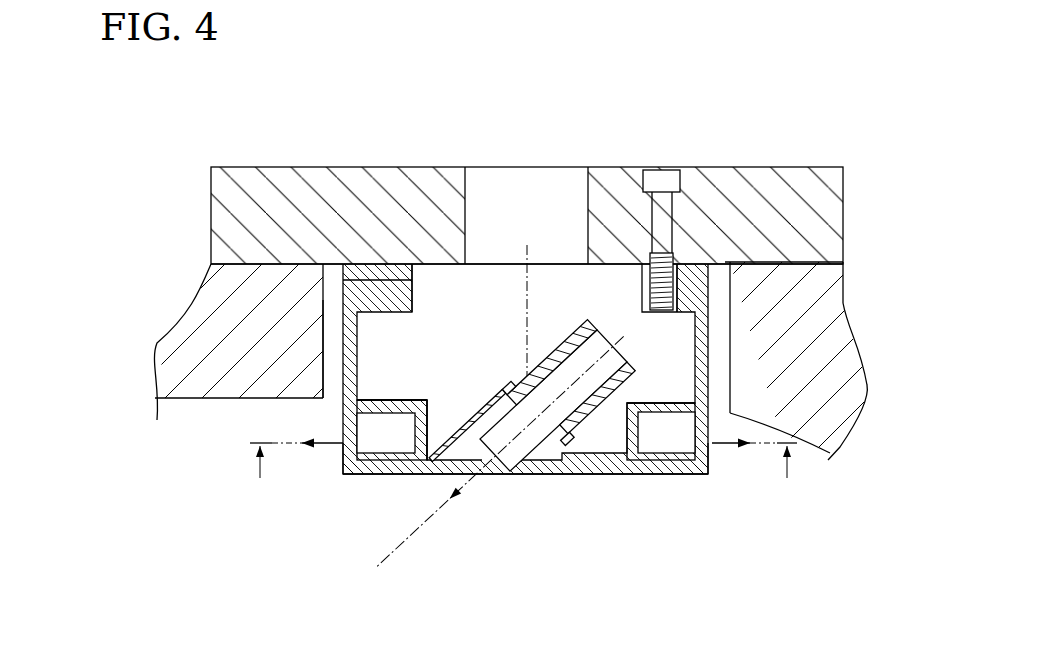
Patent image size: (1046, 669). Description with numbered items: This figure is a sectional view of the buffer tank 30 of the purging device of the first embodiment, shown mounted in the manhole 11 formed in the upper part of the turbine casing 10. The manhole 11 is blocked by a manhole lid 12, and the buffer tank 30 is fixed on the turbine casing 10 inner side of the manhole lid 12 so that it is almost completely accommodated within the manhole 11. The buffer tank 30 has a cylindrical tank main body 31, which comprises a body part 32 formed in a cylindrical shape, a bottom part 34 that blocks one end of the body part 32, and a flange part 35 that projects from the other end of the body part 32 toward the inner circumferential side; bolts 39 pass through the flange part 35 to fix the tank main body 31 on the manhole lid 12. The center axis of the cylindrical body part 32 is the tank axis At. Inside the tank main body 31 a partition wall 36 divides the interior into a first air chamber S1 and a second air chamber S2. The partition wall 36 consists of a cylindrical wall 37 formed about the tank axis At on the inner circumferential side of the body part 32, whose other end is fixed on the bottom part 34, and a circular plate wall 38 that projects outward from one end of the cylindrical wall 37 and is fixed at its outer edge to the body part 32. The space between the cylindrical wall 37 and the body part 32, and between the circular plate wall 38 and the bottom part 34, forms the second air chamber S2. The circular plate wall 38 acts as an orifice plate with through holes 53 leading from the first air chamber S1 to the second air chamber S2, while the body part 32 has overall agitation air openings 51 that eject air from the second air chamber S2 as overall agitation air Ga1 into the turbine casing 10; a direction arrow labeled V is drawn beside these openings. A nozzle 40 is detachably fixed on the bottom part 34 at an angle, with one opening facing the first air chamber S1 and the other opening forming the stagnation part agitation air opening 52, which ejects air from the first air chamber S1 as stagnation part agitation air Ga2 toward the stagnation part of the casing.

The turbine casing 10 is at (186, 308).
The manhole 11 is at (325, 294).
The manhole lid 12 is at (220, 193).
The buffer tank 30 is at (341, 488).
The tank main body 31 is at (695, 474).
The body part 32 is at (343, 340).
The bottom part 34 is at (553, 400).
The flange part 35 is at (377, 292).
The partition wall 36 is at (458, 100).
The cylindrical wall 37 is at (430, 423).
The circular plate wall 38 is at (400, 403).
The bolts 39 is at (660, 182).
The nozzle 40 is at (625, 434).
The overall agitation air openings 51 is at (342, 455).
The stagnation part agitation air opening 52 is at (534, 417).
The through holes 53 is at (392, 400).
The first air chamber S1 is at (493, 330).
The second air chamber S2 is at (388, 445).
The tank axis At is at (528, 257).
The vertical direction V is at (523, 474).
The overall agitation air Ga1 is at (340, 445).
The stagnation part agitation air Ga2 is at (622, 336).